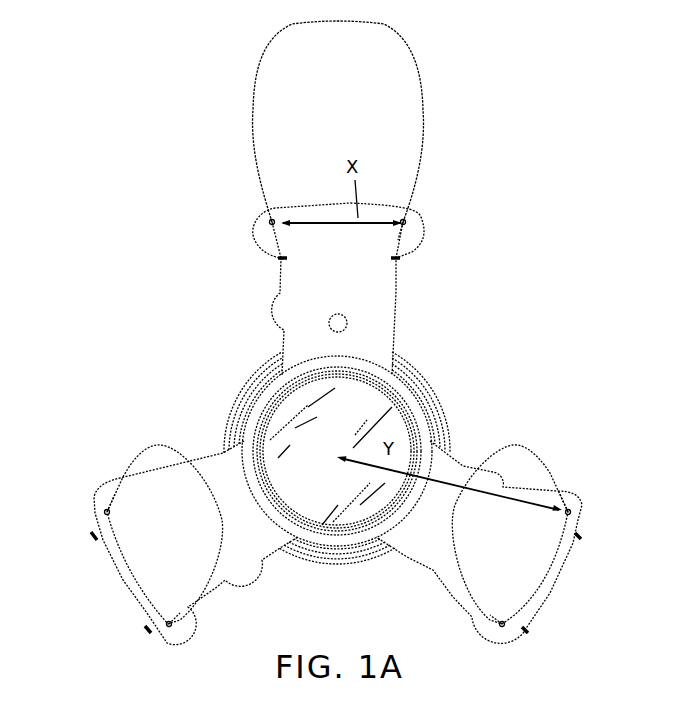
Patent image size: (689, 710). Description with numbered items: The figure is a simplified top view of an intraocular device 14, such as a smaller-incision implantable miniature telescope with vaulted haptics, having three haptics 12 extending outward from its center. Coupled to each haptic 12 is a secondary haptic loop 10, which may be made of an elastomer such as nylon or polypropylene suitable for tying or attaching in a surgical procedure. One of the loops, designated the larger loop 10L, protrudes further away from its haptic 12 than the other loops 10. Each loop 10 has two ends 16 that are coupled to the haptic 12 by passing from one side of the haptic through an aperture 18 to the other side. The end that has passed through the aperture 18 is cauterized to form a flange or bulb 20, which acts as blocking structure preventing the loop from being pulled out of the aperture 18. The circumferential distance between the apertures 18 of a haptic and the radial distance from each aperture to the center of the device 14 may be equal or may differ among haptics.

The secondary haptic loop 10 is at (148, 450).
The larger loop 10L is at (424, 118).
The haptic 12 is at (295, 290).
The intraocular device 14 is at (365, 405).
The end 16 is at (407, 243).
The aperture 18 is at (269, 221).
The flange or bulb 20 is at (286, 265).